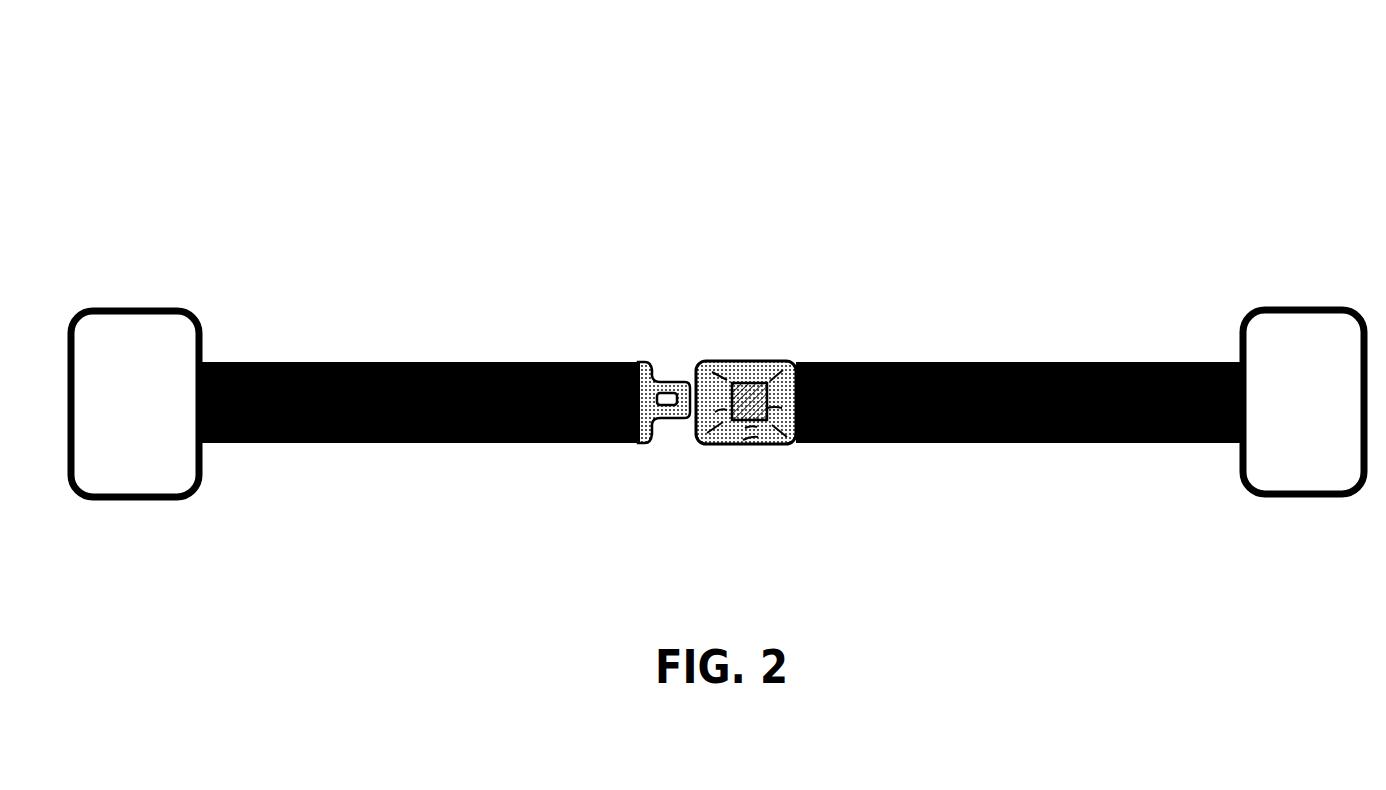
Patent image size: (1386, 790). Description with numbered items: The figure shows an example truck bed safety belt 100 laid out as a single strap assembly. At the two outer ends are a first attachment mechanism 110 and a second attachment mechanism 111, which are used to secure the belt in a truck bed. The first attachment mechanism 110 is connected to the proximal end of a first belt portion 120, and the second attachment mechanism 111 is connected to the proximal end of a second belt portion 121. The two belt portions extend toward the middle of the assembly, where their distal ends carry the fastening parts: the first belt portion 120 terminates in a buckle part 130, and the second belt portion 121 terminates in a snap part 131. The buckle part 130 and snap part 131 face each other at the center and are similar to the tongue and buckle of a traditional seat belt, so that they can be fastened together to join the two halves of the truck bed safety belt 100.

The truck bed safety belt 100 is at (798, 100).
The first attachment mechanism 110 is at (162, 254).
The second attachment mechanism 111 is at (1283, 254).
The first belt portion 120 is at (402, 309).
The second belt portion 121 is at (1009, 311).
The buckle part 130 is at (644, 334).
The snap part 131 is at (757, 324).